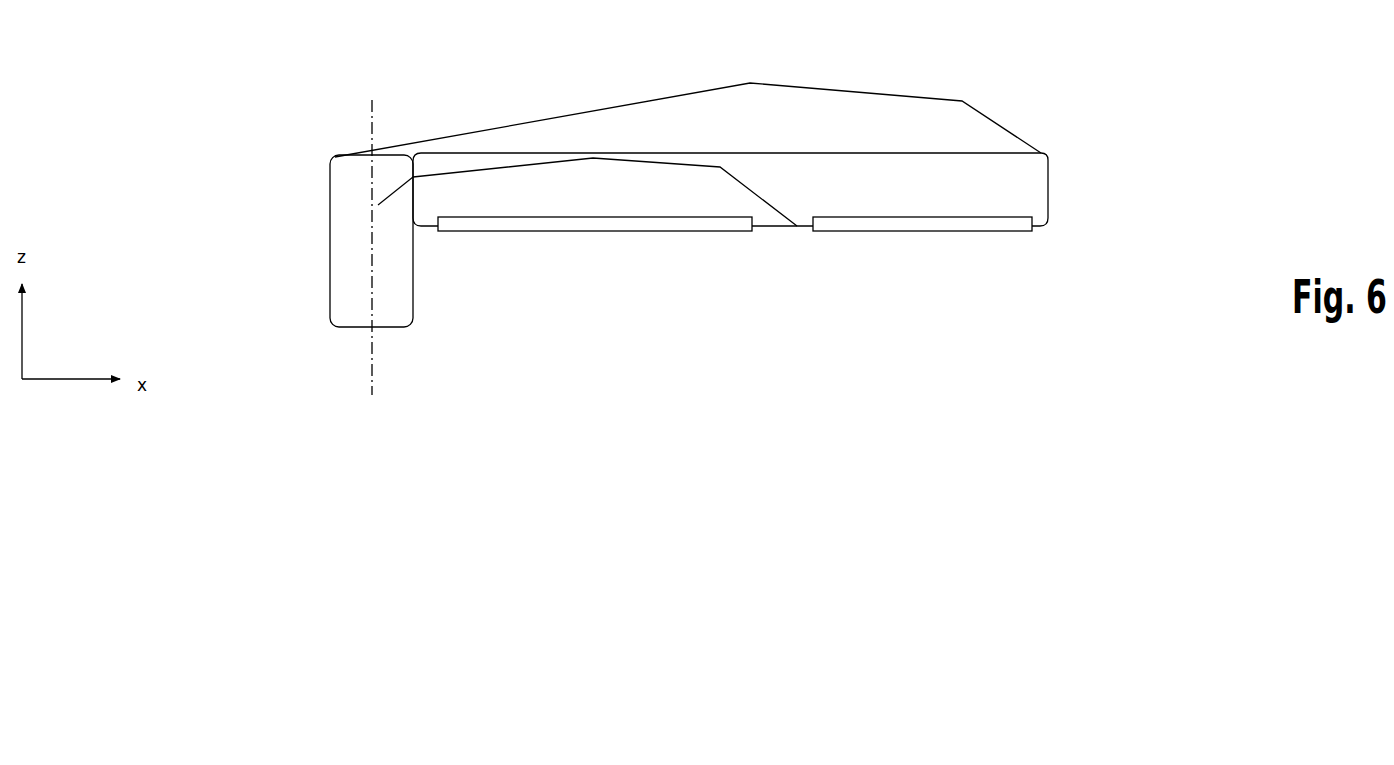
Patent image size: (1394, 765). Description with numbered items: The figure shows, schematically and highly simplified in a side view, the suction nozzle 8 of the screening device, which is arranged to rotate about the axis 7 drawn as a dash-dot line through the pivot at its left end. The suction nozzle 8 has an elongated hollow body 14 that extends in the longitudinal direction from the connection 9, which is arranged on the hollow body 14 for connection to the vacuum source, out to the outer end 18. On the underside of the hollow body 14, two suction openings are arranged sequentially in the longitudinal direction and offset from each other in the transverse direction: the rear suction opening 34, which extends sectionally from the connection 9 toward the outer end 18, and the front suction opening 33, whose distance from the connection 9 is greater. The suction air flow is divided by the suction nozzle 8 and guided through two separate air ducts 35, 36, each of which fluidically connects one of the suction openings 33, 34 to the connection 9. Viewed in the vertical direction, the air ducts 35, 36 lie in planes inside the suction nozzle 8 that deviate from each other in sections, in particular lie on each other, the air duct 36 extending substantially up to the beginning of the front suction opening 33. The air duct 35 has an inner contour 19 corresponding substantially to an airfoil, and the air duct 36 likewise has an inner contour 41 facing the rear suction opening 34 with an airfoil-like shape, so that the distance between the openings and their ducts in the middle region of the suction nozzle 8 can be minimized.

The axis 7 is at (370, 346).
The suction nozzle 8 is at (1078, 130).
The connection 9 is at (330, 196).
The hollow body 14 is at (640, 101).
The outer end 18 is at (1048, 190).
The inner contour 19 is at (797, 100).
The front suction opening 33 is at (989, 241).
The rear suction opening 34 is at (531, 241).
The air duct 35 is at (877, 143).
The air duct 36 is at (624, 201).
The inner contour 41 is at (658, 180).